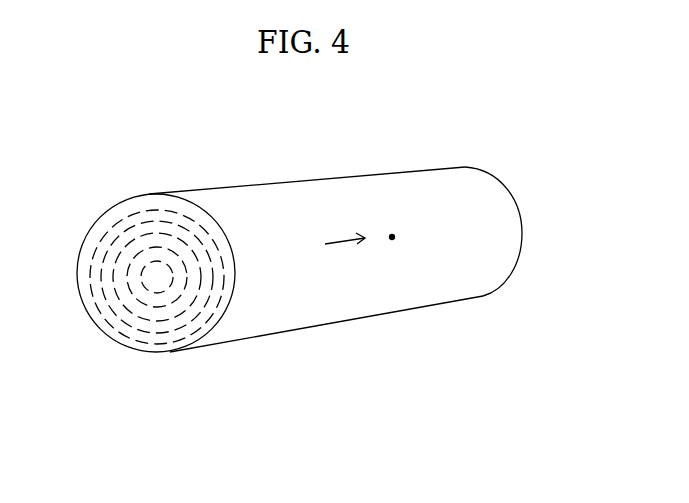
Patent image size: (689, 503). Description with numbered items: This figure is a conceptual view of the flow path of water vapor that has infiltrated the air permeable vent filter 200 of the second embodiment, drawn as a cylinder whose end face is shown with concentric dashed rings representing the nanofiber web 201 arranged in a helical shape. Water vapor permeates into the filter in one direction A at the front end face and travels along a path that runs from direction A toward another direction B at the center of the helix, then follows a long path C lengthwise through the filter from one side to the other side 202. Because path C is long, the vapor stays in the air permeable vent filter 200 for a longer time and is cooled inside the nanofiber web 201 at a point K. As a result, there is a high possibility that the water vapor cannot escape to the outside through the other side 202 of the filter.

The air permeable vent filter 200 is at (380, 168).
The nanofiber web 201 is at (132, 202).
The other side of the air permeable vent filter 202 is at (513, 192).
The one direction A is at (93, 250).
The another direction B is at (162, 280).
The long path C is at (308, 245).
The point inside the nanofiber web K is at (389, 224).